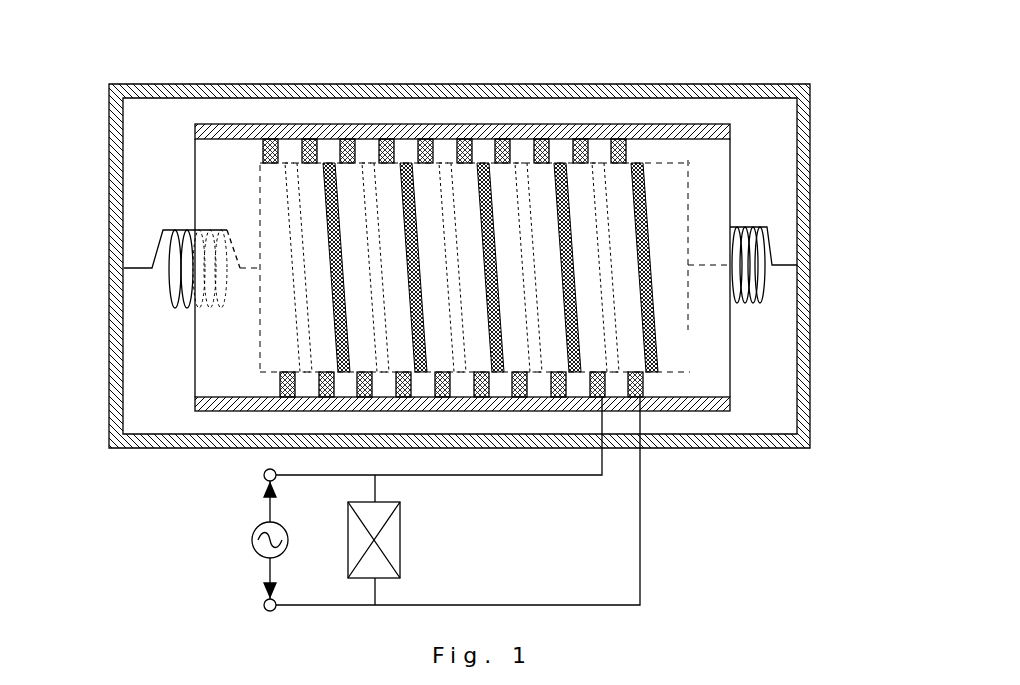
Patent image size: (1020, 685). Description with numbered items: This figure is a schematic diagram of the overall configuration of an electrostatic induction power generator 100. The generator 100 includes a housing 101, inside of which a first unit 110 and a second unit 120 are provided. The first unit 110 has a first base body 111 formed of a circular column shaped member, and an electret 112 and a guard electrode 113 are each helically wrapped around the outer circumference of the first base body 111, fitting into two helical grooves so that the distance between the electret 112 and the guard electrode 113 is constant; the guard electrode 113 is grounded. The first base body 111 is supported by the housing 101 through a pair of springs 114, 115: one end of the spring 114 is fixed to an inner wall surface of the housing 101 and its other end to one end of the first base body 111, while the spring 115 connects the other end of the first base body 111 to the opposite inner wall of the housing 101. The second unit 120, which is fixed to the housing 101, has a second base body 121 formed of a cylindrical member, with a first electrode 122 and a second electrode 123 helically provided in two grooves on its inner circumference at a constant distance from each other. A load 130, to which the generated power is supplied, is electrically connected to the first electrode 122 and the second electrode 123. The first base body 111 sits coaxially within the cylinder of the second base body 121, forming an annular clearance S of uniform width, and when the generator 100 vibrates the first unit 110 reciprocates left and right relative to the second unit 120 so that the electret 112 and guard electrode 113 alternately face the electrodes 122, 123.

The electrostatic induction power generator 100 is at (745, 65).
The housing 101 is at (522, 84).
The first unit 110 is at (713, 175).
The first base body 111 is at (690, 335).
The electret 112 is at (300, 308).
The guard electrode 113 is at (343, 342).
The spring 114 is at (157, 260).
The spring 115 is at (770, 247).
The second unit 120 is at (750, 408).
The second base body 121 is at (697, 411).
The first electrode 122 is at (268, 140).
The second electrode 123 is at (330, 140).
The load 130 is at (395, 543).
The annular clearance S is at (247, 152).